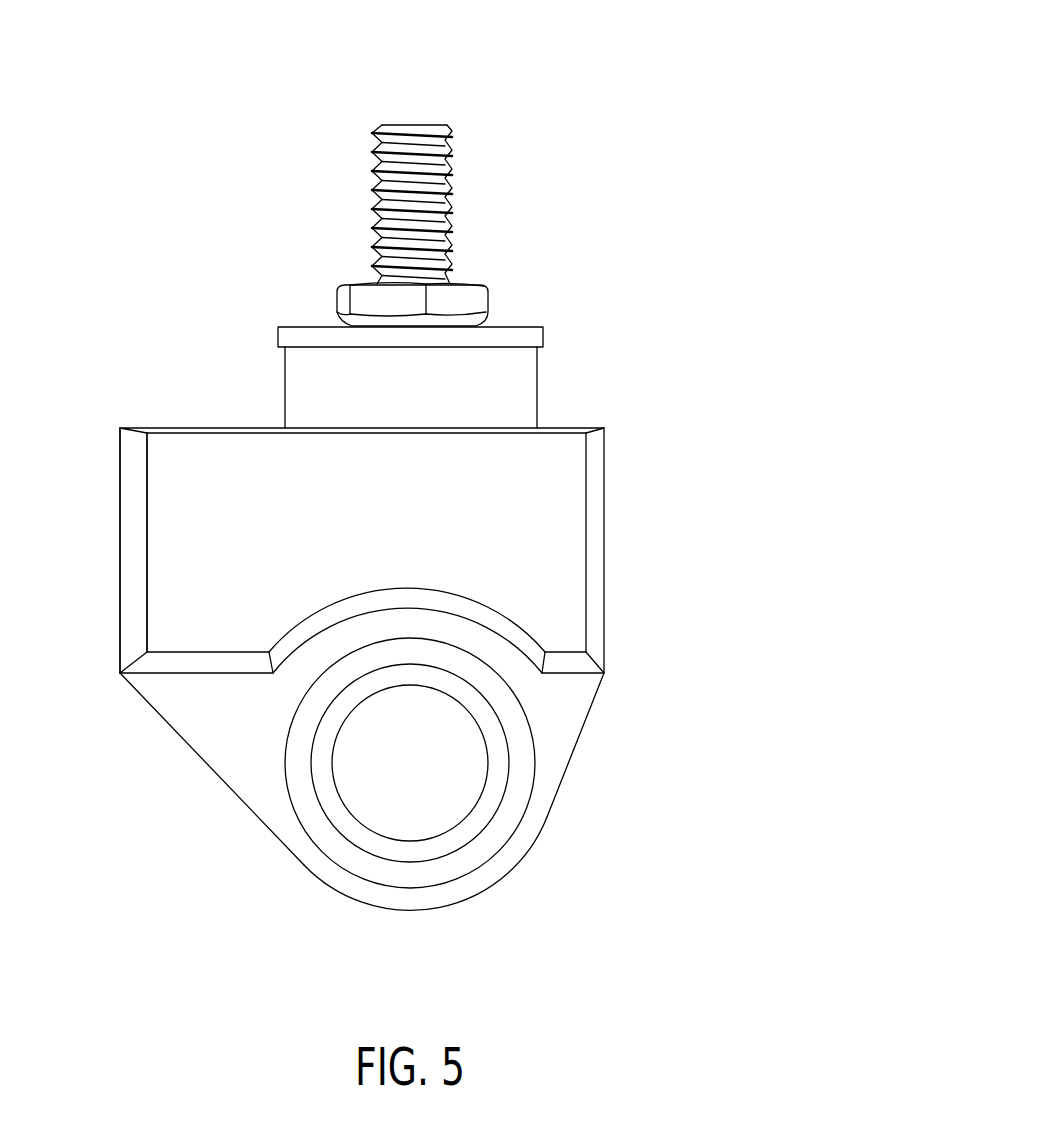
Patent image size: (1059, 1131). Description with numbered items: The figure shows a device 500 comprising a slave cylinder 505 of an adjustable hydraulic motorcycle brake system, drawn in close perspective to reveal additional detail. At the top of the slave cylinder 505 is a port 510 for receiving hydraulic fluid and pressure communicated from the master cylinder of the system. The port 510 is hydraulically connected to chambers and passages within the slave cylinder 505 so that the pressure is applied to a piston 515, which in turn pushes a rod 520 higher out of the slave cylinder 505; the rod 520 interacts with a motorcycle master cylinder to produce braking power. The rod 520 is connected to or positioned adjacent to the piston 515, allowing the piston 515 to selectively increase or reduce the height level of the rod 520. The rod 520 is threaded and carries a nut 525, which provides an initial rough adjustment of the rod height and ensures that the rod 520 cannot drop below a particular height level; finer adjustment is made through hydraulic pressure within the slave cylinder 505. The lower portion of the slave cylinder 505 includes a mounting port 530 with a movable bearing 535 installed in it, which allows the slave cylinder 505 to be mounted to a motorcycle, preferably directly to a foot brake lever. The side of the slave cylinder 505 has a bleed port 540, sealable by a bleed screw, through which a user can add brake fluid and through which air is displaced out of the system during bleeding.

The device 500 is at (706, 85).
The slave cylinder 505 is at (605, 485).
The port 510 is at (198, 430).
The piston 515 is at (538, 394).
The rod 520 is at (440, 160).
The nut 525 is at (490, 303).
The mounting port 530 is at (403, 813).
The movable bearing 535 is at (495, 813).
The bleed port 540 is at (119, 522).